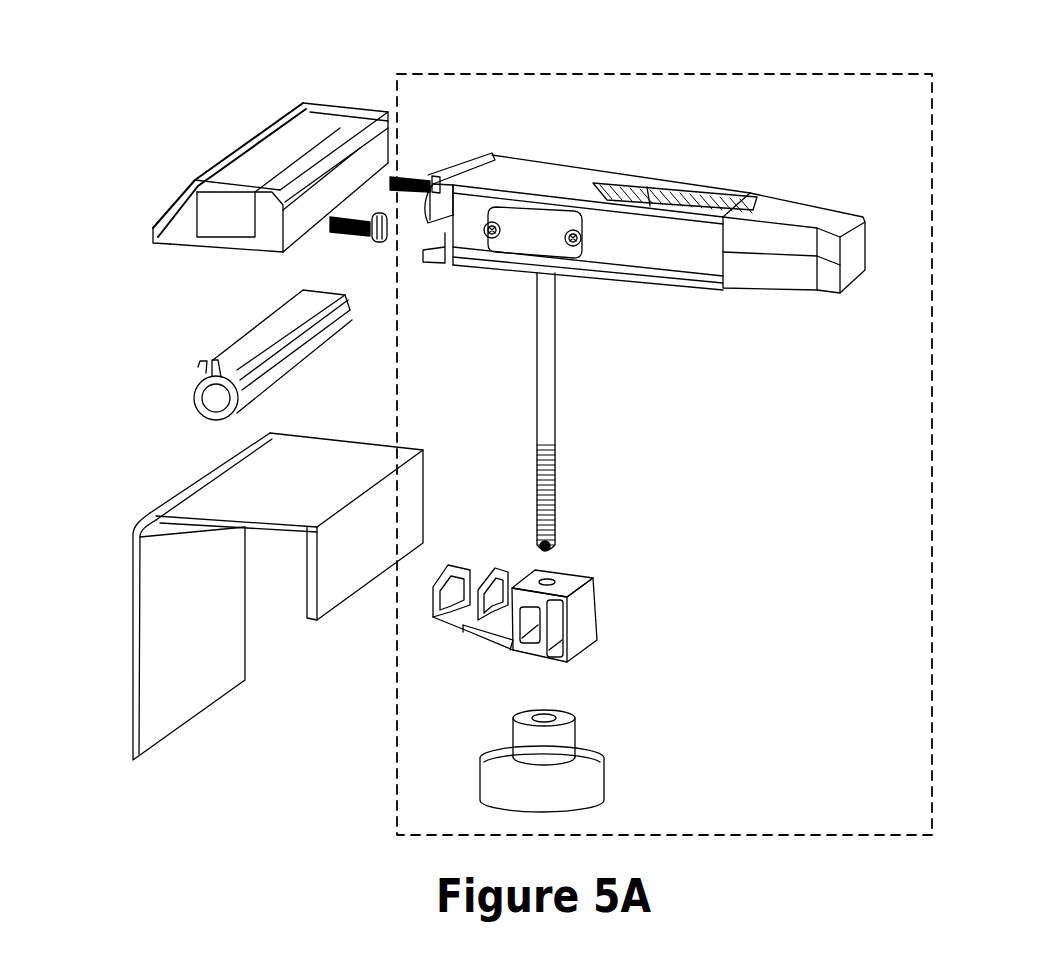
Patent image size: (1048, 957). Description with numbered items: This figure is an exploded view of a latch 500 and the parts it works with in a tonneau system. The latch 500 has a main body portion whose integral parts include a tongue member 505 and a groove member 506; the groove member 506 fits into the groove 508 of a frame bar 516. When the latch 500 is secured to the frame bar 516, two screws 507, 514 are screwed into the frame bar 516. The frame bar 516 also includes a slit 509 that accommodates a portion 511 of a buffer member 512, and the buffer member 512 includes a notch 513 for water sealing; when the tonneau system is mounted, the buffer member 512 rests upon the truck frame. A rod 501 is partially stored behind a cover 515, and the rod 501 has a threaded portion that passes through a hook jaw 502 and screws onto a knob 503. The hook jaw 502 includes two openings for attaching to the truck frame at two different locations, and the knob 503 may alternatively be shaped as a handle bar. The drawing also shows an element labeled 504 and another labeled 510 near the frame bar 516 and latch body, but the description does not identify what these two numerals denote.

The latch 500 is at (686, 74).
The rod 501 is at (548, 428).
The hook jaw 502 is at (595, 620).
The knob 503 is at (602, 784).
The bracket 504 is at (453, 248).
The tongue member 505 is at (863, 246).
The groove member 506 is at (474, 163).
The screw 507 is at (417, 173).
The groove 508 is at (334, 191).
The slit 509 is at (216, 251).
The rail base 510 is at (220, 252).
The portion of the buffer member 511 is at (230, 367).
The buffer member 512 is at (205, 397).
The notch 513 is at (210, 411).
The screw 514 is at (387, 224).
The cover 515 is at (537, 240).
The frame bar 516 is at (255, 167).